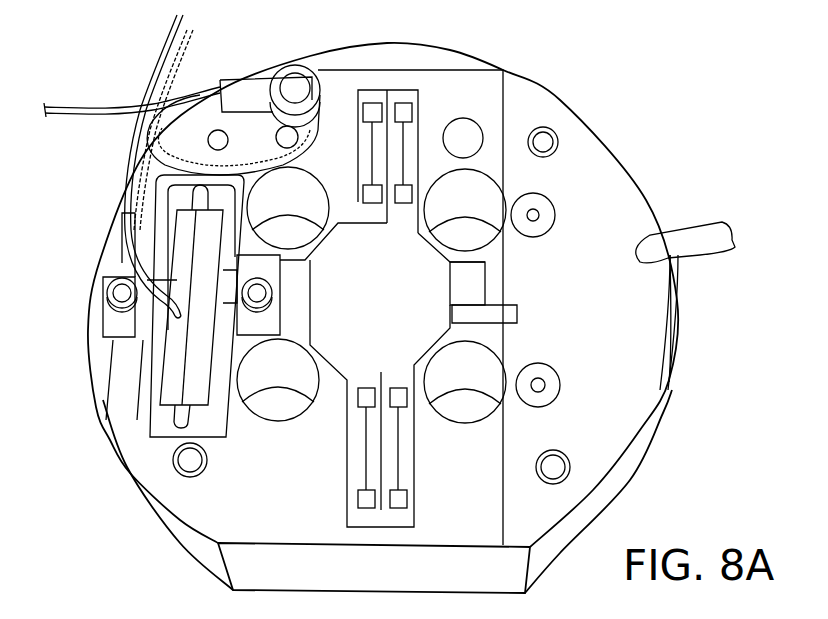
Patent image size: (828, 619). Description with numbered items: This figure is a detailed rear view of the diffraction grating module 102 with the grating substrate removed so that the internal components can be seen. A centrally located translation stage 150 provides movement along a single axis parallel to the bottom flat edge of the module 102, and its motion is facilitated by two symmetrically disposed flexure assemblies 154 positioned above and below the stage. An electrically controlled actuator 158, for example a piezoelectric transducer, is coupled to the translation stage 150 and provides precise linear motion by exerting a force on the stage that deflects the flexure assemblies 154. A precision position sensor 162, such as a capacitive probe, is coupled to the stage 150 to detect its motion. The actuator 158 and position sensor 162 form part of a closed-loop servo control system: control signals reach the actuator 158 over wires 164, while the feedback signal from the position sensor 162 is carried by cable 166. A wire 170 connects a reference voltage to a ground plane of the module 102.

The diffraction grating module 102 is at (650, 56).
The translation stage 150 is at (360, 332).
The flexure assemblies 154 is at (393, 133).
The actuator 158 is at (178, 366).
The position sensor 162 is at (503, 315).
The wires 164 is at (152, 59).
The cable 166 is at (710, 228).
The wire 170 is at (67, 117).